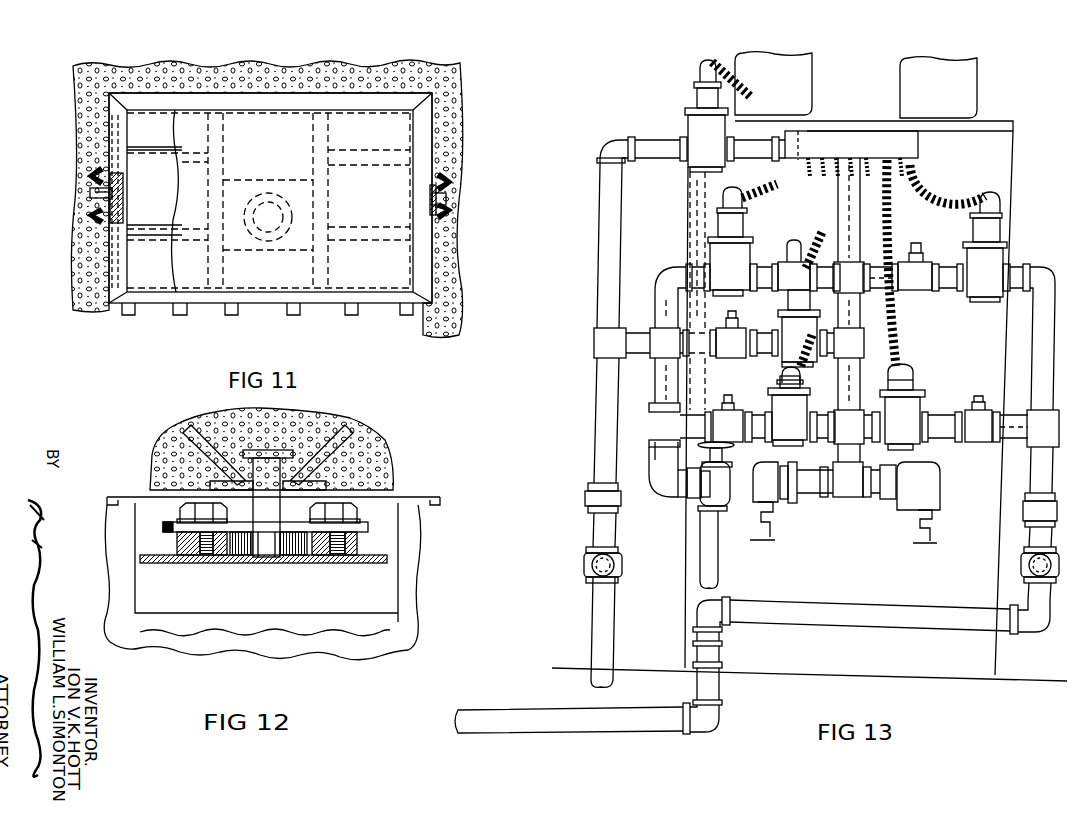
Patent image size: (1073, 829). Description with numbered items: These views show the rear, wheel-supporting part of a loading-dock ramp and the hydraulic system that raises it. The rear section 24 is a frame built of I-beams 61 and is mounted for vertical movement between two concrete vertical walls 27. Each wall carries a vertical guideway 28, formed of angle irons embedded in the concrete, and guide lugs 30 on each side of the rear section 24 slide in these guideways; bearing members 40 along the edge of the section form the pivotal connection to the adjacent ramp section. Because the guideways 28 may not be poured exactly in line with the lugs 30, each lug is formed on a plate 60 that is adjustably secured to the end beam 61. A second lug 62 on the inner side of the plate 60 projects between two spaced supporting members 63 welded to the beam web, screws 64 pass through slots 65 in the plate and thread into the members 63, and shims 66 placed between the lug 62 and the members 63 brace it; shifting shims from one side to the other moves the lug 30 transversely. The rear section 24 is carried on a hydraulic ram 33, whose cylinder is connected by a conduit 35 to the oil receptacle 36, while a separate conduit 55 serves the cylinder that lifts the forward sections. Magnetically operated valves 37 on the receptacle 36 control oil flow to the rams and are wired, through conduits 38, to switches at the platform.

In FIG. 11, the rear section 24 is at (405, 128).
In FIG. 12, the rear section 24 is at (398, 577).
In FIG. 11, the vertical walls 27 is at (103, 110).
In FIG. 12, the vertical walls 27 is at (360, 448).
In FIG. 11, the vertical guideways 28 is at (446, 207).
In FIG. 12, the vertical guideways 28 is at (273, 450).
In FIG. 11, the lugs 30 is at (92, 193).
In FIG. 12, the lugs 30 is at (257, 458).
In FIG. 11, the ram 33 is at (267, 193).
In FIG. 13, the conduit 35 is at (600, 587).
In FIG. 13, the oil receptacle 36 is at (998, 162).
In FIG. 13, the magnetically operated valves 37 is at (733, 267).
In FIG. 13, the conduits 38 is at (818, 246).
In FIG. 11, the bearing member 40 is at (173, 313).
In FIG. 13, the conduit 55 is at (642, 718).
In FIG. 12, the plate 60 is at (368, 528).
In FIG. 11, the I-beams 61 is at (208, 183).
In FIG. 12, the I-beams 61 is at (367, 565).
In FIG. 12, the second lug 62 is at (270, 543).
In FIG. 12, the supporting members 63 is at (177, 543).
In FIG. 12, the screws 64 is at (183, 507).
In FIG. 12, the slots 65 is at (183, 527).
In FIG. 12, the shims 66 is at (237, 558).